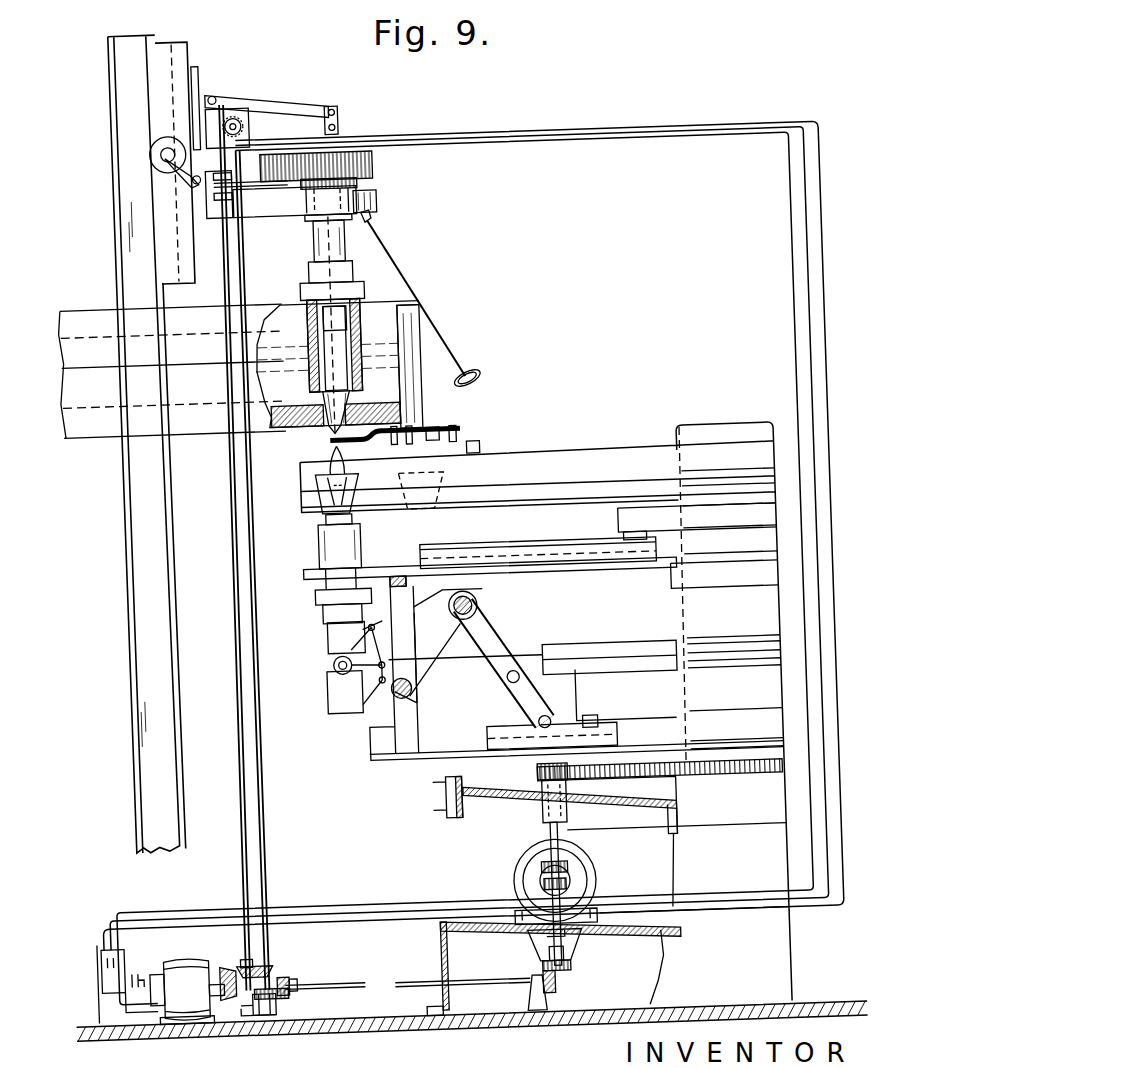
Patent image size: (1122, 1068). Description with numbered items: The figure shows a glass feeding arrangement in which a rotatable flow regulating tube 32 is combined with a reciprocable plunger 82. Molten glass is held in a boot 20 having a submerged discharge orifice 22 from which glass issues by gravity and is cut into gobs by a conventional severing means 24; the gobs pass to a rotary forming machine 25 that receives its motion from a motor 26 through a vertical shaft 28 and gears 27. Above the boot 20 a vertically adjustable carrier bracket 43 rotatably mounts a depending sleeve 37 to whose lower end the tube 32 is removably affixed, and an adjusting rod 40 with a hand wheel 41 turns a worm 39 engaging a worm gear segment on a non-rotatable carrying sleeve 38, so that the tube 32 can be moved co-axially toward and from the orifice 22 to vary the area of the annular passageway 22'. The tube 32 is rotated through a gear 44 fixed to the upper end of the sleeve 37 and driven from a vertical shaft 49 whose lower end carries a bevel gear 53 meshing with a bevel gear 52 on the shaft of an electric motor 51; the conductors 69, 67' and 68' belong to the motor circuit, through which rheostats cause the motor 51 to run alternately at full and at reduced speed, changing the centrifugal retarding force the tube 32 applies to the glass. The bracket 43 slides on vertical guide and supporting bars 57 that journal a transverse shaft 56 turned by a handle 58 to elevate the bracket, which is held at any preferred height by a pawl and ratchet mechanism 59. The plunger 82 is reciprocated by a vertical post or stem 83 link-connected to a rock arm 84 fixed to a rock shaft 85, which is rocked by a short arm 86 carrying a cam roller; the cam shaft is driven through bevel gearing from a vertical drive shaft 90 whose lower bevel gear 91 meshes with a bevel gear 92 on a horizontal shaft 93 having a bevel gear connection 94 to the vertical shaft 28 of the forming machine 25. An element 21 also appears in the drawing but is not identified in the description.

The boot 20 is at (94, 306).
The column 21 is at (127, 465).
The discharge orifice 22 is at (338, 364).
The annular passageway 22' is at (382, 367).
The severing means 24 is at (405, 443).
The forming machine 25 is at (583, 456).
The motor 26 is at (584, 871).
The gears 27 is at (532, 884).
The vertical shaft 28 is at (540, 831).
The flow regulating tube 32 is at (315, 346).
The depending sleeve 37 is at (324, 251).
The non-rotatable carrying sleeve 38 is at (321, 216).
The worm 39 is at (389, 200).
The adjusting rod 40 is at (401, 258).
The hand wheel 41 is at (480, 378).
The carrier bracket 43 is at (296, 206).
The gear 44 is at (386, 160).
The vertical shaft 49 is at (232, 548).
The electric motor 51 is at (176, 951).
The bevel gear 52 is at (212, 992).
The bevel gear 53 is at (228, 957).
The transverse shaft 56 is at (166, 136).
The vertical guide and supporting bars 57 is at (192, 36).
The handle 58 is at (200, 167).
The pawl and ratchet mechanism 59 is at (173, 146).
The conductor 67' is at (460, 535).
The conductor 68' is at (457, 538).
The conductor 69 is at (392, 917).
The reciprocable plunger 82 is at (334, 370).
The vertical post or stem 83 is at (345, 249).
The rock arm 84 is at (297, 96).
The rock shaft 85 is at (229, 88).
The short arm 86 is at (249, 104).
The vertical drive shaft 90 is at (255, 603).
The bevel gear 91 is at (257, 1008).
The bevel gear 92 is at (277, 973).
The horizontal shaft 93 is at (331, 978).
The bevel gear connection 94 is at (551, 978).